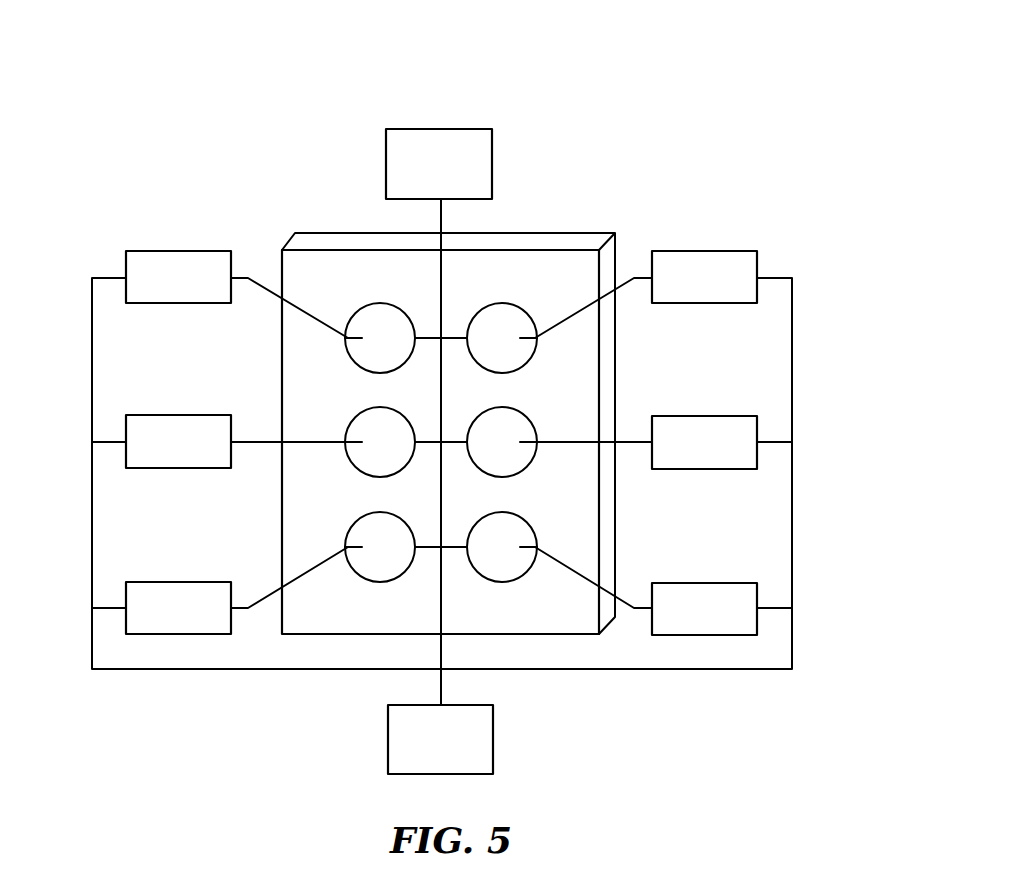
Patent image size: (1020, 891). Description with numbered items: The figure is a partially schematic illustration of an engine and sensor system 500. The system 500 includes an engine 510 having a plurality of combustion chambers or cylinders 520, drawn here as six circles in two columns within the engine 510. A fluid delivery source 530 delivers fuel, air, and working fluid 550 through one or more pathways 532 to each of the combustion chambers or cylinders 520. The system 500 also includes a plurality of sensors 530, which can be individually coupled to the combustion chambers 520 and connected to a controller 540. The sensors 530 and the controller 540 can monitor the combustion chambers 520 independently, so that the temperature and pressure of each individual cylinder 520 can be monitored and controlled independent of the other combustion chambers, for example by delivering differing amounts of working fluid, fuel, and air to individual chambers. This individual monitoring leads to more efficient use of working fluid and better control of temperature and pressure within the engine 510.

The system 500 is at (716, 114).
The engine 510 is at (612, 248).
The combustion chambers or cylinders 520 is at (362, 364).
The sensors 530 is at (135, 262).
The pathways 532 is at (441, 215).
The controller 540 is at (483, 738).
The working fluid 550 is at (483, 160).